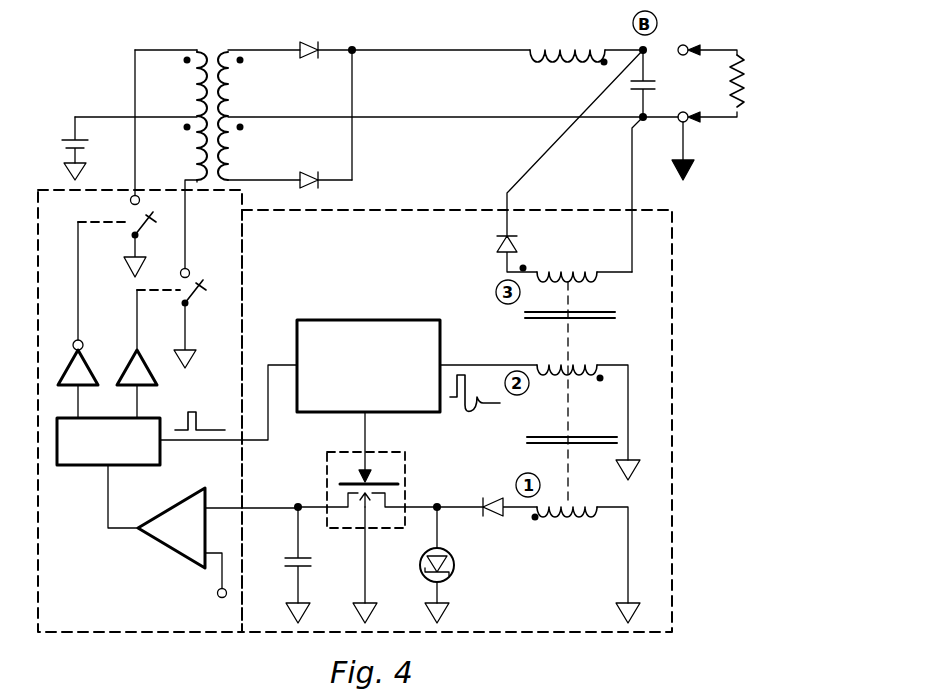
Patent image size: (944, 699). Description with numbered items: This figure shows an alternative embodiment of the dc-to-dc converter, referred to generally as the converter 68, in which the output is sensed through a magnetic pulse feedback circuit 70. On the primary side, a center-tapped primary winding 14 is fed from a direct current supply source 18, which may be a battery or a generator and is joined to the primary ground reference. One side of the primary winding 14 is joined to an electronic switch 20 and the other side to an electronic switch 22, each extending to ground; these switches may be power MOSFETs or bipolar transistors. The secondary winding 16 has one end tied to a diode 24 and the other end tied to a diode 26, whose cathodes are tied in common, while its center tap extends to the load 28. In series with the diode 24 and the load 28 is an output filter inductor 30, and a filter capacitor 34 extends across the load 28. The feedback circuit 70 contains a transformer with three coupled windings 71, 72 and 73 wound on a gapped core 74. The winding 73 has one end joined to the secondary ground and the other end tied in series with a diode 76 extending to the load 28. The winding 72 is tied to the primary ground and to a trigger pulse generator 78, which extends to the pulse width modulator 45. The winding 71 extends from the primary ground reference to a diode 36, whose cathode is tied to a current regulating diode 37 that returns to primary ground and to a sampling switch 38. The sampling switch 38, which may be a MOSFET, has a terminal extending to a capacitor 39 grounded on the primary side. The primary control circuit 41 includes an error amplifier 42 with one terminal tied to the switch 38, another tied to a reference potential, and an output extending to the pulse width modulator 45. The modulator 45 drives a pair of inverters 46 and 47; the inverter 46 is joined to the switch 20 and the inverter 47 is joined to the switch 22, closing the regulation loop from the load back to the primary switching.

The converter 68 is at (108, 94).
The primary winding 14 is at (193, 84).
The secondary winding 16 is at (231, 86).
The direct current supply source 18 is at (90, 143).
The electronic switch 20 is at (142, 236).
The electronic switch 22 is at (194, 300).
The diode 24 is at (316, 42).
The diode 26 is at (302, 190).
The load 28 is at (743, 75).
The output filter inductor 30 is at (583, 65).
The filter capacitor 34 is at (633, 88).
The diode 36 is at (496, 518).
The current regulating diode 37 is at (453, 578).
The sampling switch 38 is at (379, 454).
The capacitor 39 is at (286, 570).
The primary control circuit 41 is at (173, 640).
The error amplifier 42 is at (195, 545).
The pulse width modulator 45 is at (100, 469).
The inverter 46 is at (98, 364).
The inverter 47 is at (157, 364).
The magnetic pulse feedback circuit 70 is at (528, 633).
The winding 71 is at (575, 520).
The winding 72 is at (578, 378).
The winding 73 is at (578, 284).
The gapped core 74 is at (570, 420).
The diode 76 is at (498, 250).
The trigger pulse generator 78 is at (397, 318).